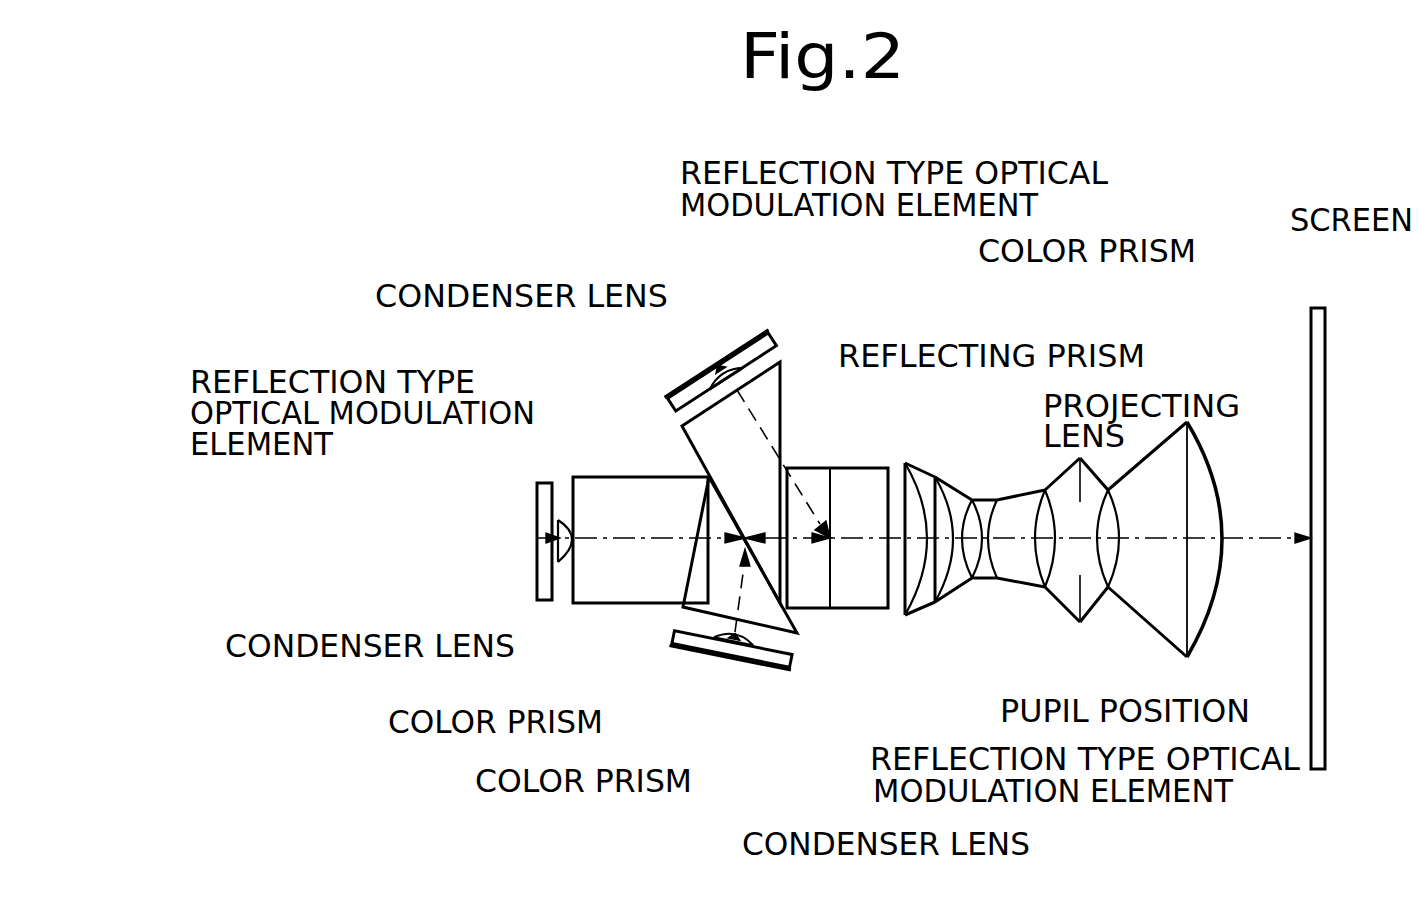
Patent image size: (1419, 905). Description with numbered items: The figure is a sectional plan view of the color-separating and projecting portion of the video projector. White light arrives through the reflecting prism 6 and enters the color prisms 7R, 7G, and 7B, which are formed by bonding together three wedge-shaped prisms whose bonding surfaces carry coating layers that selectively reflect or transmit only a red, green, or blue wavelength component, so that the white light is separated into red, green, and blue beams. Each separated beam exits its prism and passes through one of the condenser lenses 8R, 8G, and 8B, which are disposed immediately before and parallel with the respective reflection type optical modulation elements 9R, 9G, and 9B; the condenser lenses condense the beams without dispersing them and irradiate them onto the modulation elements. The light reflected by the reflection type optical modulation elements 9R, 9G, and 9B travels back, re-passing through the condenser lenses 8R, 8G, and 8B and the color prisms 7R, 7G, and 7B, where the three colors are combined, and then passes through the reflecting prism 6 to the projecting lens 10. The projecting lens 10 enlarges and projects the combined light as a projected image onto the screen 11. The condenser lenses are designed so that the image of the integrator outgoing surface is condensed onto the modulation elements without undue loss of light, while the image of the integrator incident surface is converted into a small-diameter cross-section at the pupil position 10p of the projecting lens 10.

The reflection type optical modulation element 9G is at (540, 498).
The condenser lens 8G is at (557, 568).
The color prism 7G is at (588, 606).
The color prism 7B is at (785, 380).
The condenser lens 8B is at (712, 372).
The reflection type optical modulation element 9B is at (754, 342).
The color prism 7R is at (693, 612).
The condenser lens 8R is at (748, 663).
The reflection type optical modulation element 9R is at (778, 667).
The reflecting prism 6 is at (862, 468).
The projecting lens 10 is at (1010, 497).
The pupil position 10p is at (1077, 587).
The screen 11 is at (1316, 308).